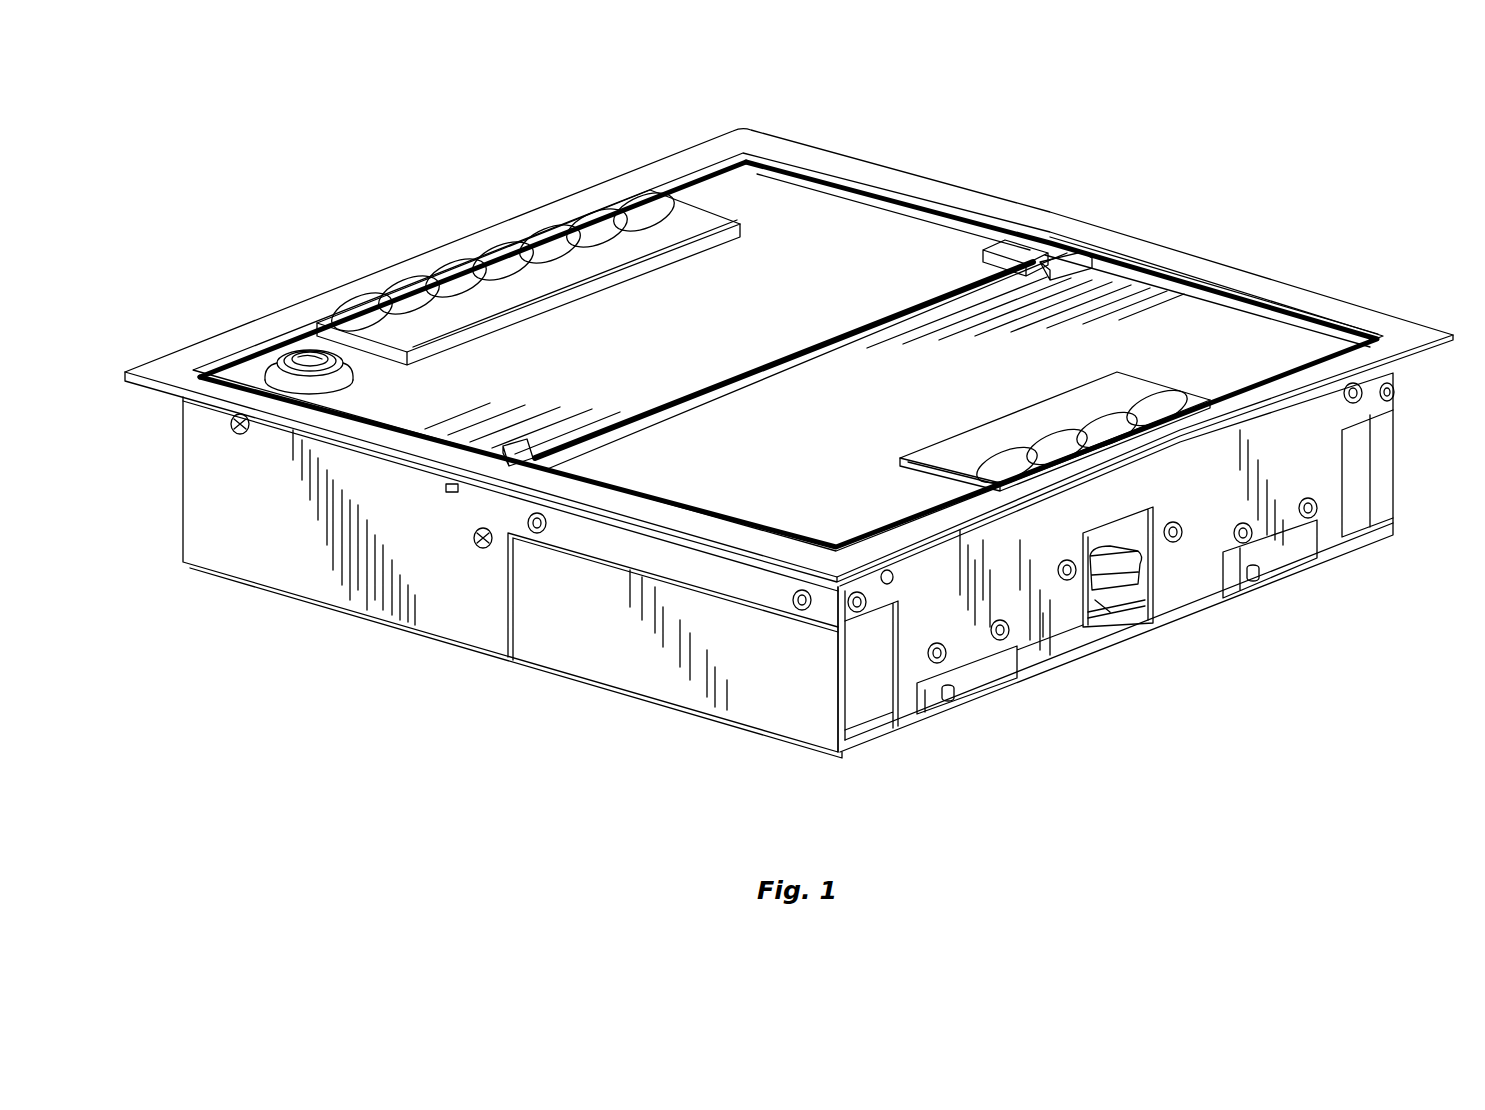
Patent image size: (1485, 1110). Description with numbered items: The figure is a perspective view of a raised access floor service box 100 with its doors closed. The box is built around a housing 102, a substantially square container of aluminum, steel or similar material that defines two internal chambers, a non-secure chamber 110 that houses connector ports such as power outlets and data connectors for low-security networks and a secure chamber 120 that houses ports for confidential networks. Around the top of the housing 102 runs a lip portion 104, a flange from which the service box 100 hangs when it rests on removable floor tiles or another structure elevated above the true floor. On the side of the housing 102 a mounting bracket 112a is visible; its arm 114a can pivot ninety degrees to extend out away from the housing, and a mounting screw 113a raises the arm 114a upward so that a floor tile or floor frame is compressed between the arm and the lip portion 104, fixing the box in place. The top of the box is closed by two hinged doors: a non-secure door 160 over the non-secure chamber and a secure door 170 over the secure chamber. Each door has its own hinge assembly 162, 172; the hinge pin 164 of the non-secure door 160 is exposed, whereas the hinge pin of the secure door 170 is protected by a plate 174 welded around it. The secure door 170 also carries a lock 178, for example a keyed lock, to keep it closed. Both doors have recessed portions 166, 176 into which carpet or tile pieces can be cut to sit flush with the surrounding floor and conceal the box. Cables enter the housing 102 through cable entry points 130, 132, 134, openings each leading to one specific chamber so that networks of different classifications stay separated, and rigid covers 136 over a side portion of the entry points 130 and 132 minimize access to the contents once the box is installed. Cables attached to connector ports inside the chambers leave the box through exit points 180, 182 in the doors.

The raised access floor service box 100 is at (308, 157).
The housing 102 is at (180, 520).
The lip portion 104 is at (752, 128).
The chamber 110 is at (1283, 182).
The mounting bracket 112a is at (1135, 650).
The mounting screw 113a is at (1090, 610).
The arm 114a is at (1120, 575).
The chamber 120 is at (905, 75).
The cable entry point 130 is at (896, 756).
The cable entry point 132 is at (1385, 552).
The cable entry point 134 is at (985, 710).
The rigid cover 136 is at (598, 657).
The door 160 is at (1118, 430).
The hinge assembly 162 is at (1040, 245).
The hinge pin 164 is at (1163, 308).
The recessed portion 166 is at (1263, 318).
The door 170 is at (578, 289).
The hinge assembly 172 is at (1040, 228).
The plate 174 is at (1068, 232).
The recessed portion 176 is at (702, 182).
The lock 178 is at (300, 352).
The exit point 180 is at (1140, 457).
The exit point 182 is at (465, 240).